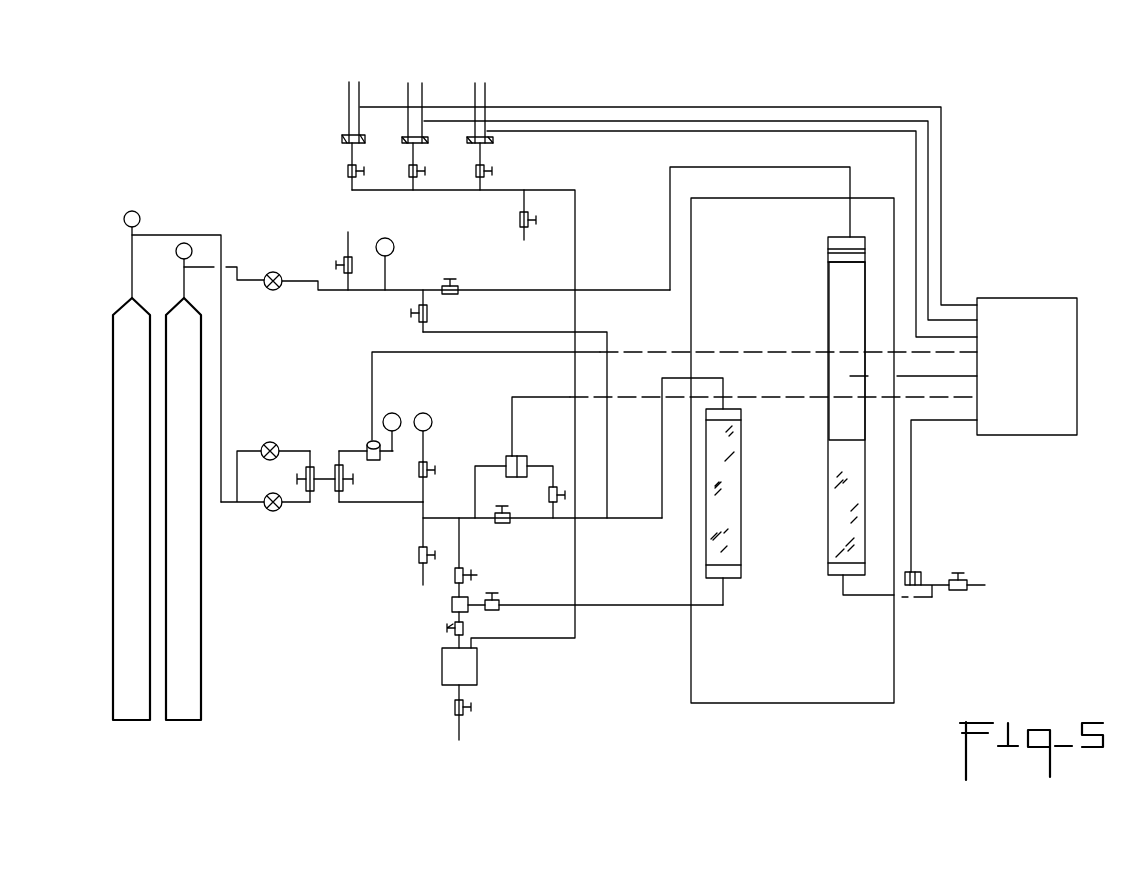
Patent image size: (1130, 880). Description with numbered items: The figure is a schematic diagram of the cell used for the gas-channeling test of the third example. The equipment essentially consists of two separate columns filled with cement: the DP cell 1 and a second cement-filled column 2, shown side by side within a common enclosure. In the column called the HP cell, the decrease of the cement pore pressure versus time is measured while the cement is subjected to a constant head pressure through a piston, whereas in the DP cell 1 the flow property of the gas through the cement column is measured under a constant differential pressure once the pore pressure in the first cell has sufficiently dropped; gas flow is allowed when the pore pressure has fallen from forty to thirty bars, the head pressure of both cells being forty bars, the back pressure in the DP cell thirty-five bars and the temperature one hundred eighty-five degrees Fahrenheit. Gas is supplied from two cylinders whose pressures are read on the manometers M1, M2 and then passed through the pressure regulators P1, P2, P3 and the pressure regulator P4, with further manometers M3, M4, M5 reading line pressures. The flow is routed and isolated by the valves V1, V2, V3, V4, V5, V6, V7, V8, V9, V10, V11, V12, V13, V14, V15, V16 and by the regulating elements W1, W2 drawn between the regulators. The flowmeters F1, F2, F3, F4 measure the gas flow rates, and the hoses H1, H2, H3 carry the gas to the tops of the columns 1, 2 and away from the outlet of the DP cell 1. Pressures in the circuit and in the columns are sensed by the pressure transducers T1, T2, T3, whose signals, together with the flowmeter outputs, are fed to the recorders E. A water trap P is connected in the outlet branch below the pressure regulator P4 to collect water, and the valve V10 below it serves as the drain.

The manometer M1 is at (127, 216).
The manometer M2 is at (176, 256).
The manometer M3 is at (393, 236).
The manometer M4 is at (398, 408).
The manometer M5 is at (431, 408).
The pressure regulator P1 is at (283, 262).
The pressure regulator P2 is at (268, 512).
The pressure regulator P3 is at (281, 433).
The pressure regulator P4 is at (452, 606).
The water trap P is at (459, 666).
The valve V1 is at (343, 261).
The valve V2 is at (456, 273).
The valve V3 is at (408, 320).
The valve V4 is at (437, 460).
The valve V5 is at (416, 560).
The valve V6 is at (504, 523).
The valve V7 is at (549, 494).
The valve V8 is at (480, 576).
The valve V9 is at (449, 630).
The valve V10 is at (462, 715).
The valve V11 is at (494, 608).
The valve V12 is at (537, 226).
The valve V13 is at (494, 180).
The valve V14 is at (437, 180).
The valve V15 is at (376, 180).
The valve V16 is at (951, 590).
The pressure regulator / switching valve W1 is at (296, 479).
The pressure regulator / switching valve W2 is at (357, 482).
The flowmeter F1 is at (366, 446).
The flowmeter F2 is at (356, 92).
The flowmeter F3 is at (419, 92).
The flowmeter F4 is at (480, 92).
The pressure transducer T1 is at (504, 462).
The pressure transducer T2 is at (916, 572).
The pressure transducer T3 is at (913, 369).
The hose H1 is at (790, 167).
The hose H2 is at (689, 380).
The hose H3 is at (648, 607).
The recorders E is at (1027, 366).
The DP cell 1 is at (749, 578).
The second column (reactor) 2 is at (817, 560).